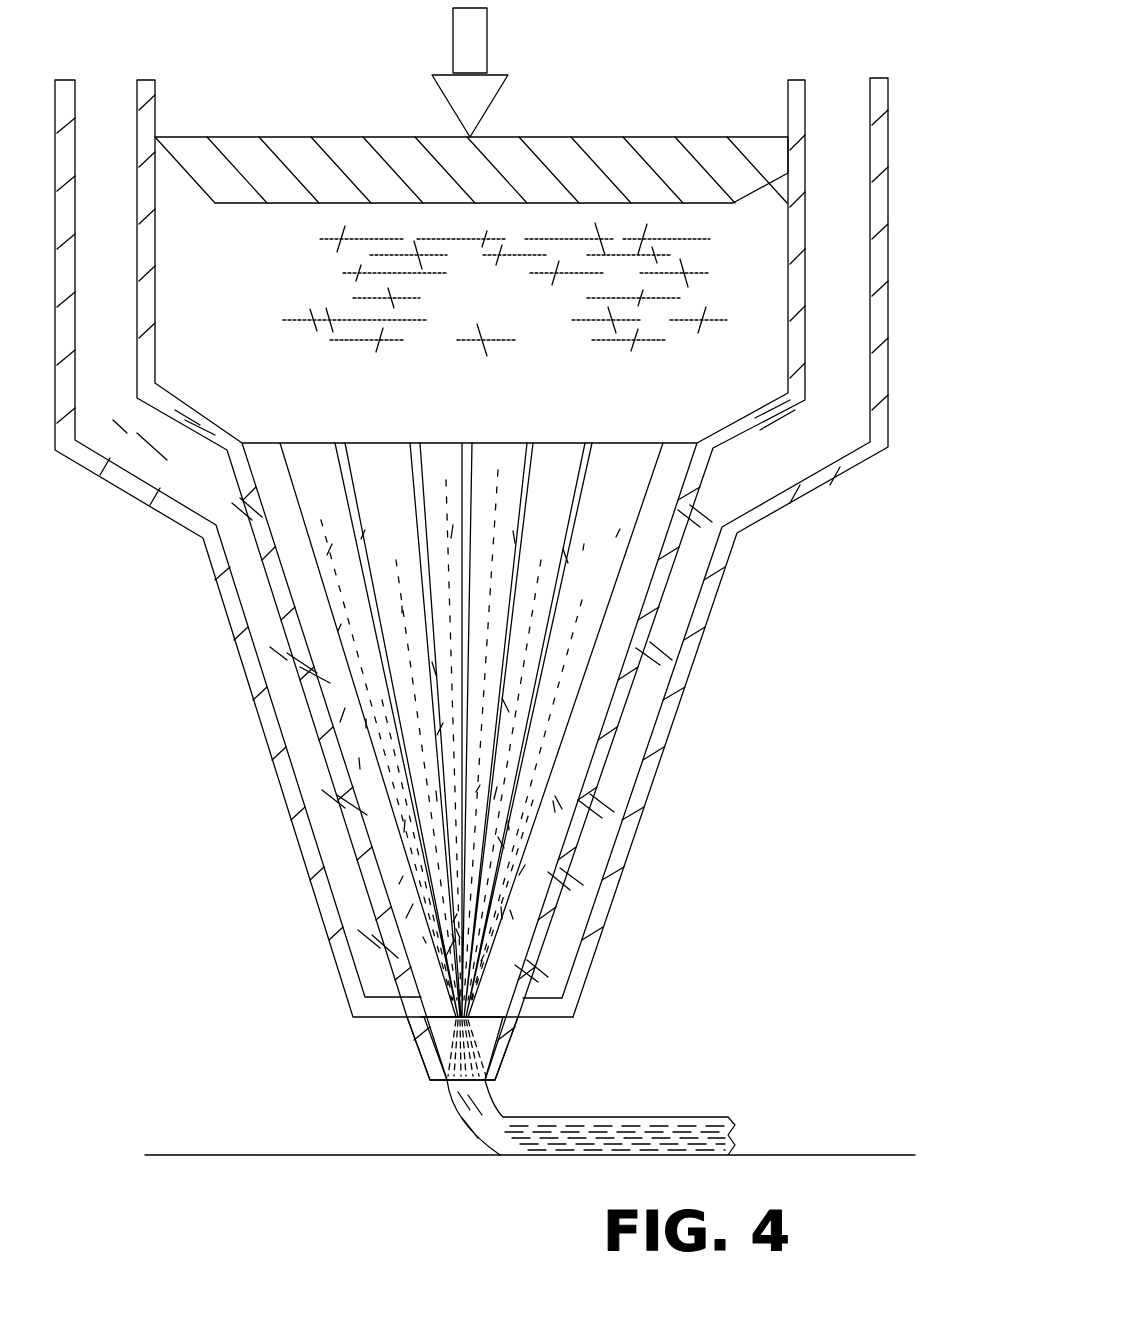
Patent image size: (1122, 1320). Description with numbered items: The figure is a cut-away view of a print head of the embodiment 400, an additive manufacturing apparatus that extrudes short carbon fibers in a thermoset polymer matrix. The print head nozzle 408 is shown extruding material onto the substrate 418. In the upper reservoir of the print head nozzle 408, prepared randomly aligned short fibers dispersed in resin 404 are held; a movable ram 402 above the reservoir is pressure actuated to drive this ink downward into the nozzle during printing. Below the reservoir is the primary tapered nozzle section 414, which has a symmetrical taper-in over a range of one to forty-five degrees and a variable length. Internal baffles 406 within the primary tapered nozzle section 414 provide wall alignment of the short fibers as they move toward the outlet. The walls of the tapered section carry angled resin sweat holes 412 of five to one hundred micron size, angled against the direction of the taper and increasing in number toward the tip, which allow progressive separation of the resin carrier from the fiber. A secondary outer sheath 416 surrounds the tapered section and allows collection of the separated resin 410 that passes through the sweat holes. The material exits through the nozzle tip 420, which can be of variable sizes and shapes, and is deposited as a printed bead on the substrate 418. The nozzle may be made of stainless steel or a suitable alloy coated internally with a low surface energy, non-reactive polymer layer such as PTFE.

The embodiment 400 is at (640, 40).
The movable ram 402 is at (600, 137).
The randomly aligned short fibers dispersed in resin 404 is at (530, 323).
The internal baffles 406 is at (463, 440).
The print head nozzle 408 is at (888, 123).
The separated resin 410 is at (140, 453).
The angled resin sweat holes 412 is at (250, 530).
The primary tapered nozzle section 414 is at (273, 597).
The secondary outer sheath 416 is at (297, 858).
The substrate 418 is at (265, 1155).
The nozzle tip 420 is at (500, 1067).